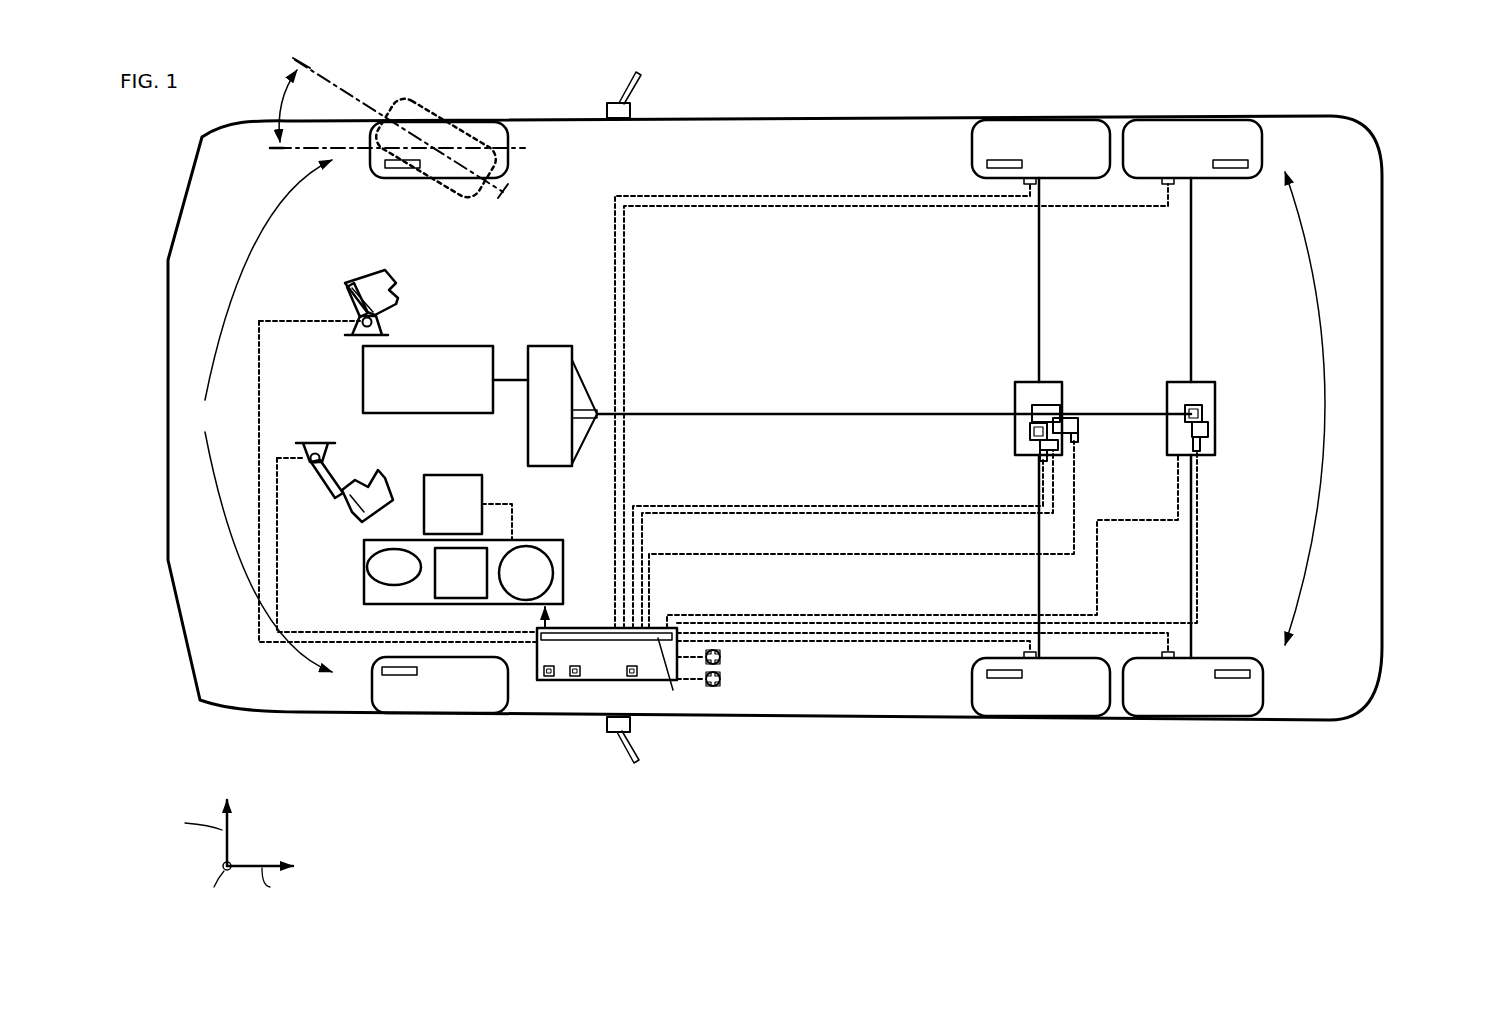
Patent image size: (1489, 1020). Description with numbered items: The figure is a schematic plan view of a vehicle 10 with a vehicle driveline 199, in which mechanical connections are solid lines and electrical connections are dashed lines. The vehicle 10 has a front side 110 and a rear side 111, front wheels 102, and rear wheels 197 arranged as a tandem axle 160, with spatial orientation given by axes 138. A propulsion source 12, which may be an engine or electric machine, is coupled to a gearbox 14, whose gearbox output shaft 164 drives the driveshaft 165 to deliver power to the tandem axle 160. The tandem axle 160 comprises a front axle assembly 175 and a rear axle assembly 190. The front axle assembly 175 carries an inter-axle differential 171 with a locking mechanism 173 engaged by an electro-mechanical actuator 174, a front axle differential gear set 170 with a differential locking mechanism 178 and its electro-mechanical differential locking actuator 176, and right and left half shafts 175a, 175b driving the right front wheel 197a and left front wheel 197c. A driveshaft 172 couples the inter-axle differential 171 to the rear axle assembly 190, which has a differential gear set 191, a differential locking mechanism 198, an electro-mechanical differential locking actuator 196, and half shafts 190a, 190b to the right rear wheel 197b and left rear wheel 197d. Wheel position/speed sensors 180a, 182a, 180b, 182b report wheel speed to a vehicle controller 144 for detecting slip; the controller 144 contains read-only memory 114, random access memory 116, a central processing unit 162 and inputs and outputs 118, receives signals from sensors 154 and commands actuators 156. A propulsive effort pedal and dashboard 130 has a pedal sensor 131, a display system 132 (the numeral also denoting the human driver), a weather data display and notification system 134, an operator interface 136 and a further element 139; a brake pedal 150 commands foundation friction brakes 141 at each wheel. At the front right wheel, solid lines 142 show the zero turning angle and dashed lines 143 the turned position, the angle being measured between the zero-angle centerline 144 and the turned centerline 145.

The vehicle 10 is at (975, 118).
The propulsion source 12 is at (445, 379).
The gearbox 14 is at (550, 406).
The front wheels 102 is at (256, 416).
The front side 110 is at (135, 215).
The rear side 111 is at (1437, 155).
The read-only memory 114 is at (549, 676).
The random access memory 116 is at (578, 676).
The inputs and outputs 118 is at (678, 675).
The dashboard 130 is at (345, 300).
The propulsive effort pedal sensor 131 is at (380, 322).
The display system 132 is at (395, 285).
The interactive weather data display and notification system 134 is at (461, 573).
The operator interface 136 is at (526, 573).
The axes 138 is at (255, 812).
The steering control module 139 is at (468, 507).
The foundation friction brakes 141 is at (400, 168).
The front right wheel at zero turning angle 142 is at (505, 128).
The front right wheel at turning angle 143 is at (480, 205).
The vehicle controller 144 is at (277, 150).
The centerline of the right wheel at a turning angle 145 is at (508, 190).
The brake pedal 150 is at (340, 500).
The sensors 154 is at (300, 458).
The actuators 156 is at (721, 680).
The tandem axle 160 is at (985, 245).
The central processing unit 162 is at (632, 676).
The gearbox output shaft 164 is at (582, 410).
The driveshaft 165 is at (905, 413).
The front axle differential gear set 170 is at (1032, 432).
The inter-axle differential 171 is at (1058, 410).
The driveshaft 172 is at (1130, 413).
The locking mechanism 173 is at (1078, 425).
The electro-mechanical actuator 174 is at (1078, 440).
The front axle assembly 175 is at (1020, 368).
The right half shaft 175a is at (1040, 300).
The left half shaft 175b is at (1039, 570).
The electro-mechanical differential locking actuator 176 is at (1040, 456).
The differential locking mechanism 178 is at (1040, 445).
The wheel position/speed sensor 180a is at (1024, 182).
The wheel position/speed sensor 180b is at (1024, 655).
The wheel position/speed sensor 182a is at (1162, 182).
The wheel position/speed sensor 182b is at (1162, 655).
The rear axle assembly 190 is at (1222, 465).
The right half shaft 190a is at (1192, 300).
The left half shaft 190b is at (1191, 570).
The differential gear set 191 is at (1202, 412).
The electro-mechanical differential locking actuator 196 is at (1200, 445).
The rear wheels 197 is at (1330, 408).
The right front wheel 197a is at (1040, 118).
The right rear wheel 197b is at (1190, 118).
The left front wheel 197c is at (1040, 718).
The left rear wheel 197d is at (1192, 718).
The differential locking mechanism 198 is at (1208, 430).
The vehicle driveline 199 is at (780, 358).